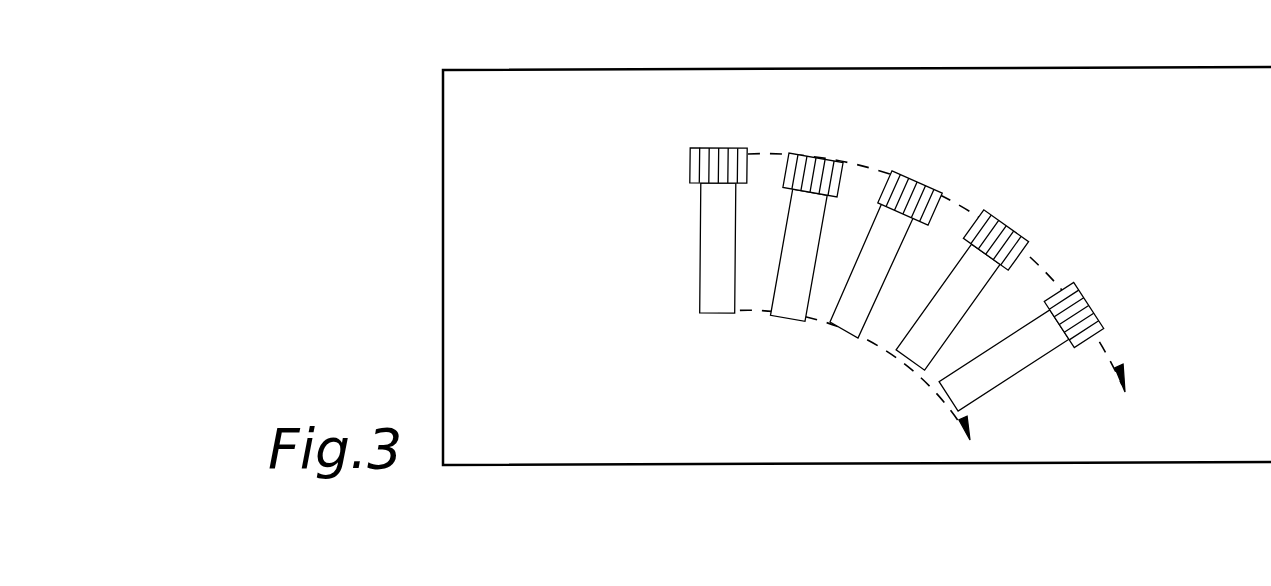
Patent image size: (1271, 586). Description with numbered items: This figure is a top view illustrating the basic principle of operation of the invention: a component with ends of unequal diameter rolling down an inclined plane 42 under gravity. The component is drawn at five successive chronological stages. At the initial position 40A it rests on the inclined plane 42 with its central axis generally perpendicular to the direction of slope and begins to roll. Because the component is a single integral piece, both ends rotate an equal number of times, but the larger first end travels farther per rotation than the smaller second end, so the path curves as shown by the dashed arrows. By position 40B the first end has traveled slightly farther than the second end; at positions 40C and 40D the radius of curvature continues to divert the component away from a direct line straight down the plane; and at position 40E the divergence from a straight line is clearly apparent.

The inclined plane 42 is at (489, 147).
The initial position of component 40A is at (713, 148).
The second position of component 40B is at (820, 157).
The third position of component 40C is at (918, 178).
The fourth position of component 40D is at (1005, 232).
The final position of component 40E is at (1097, 305).